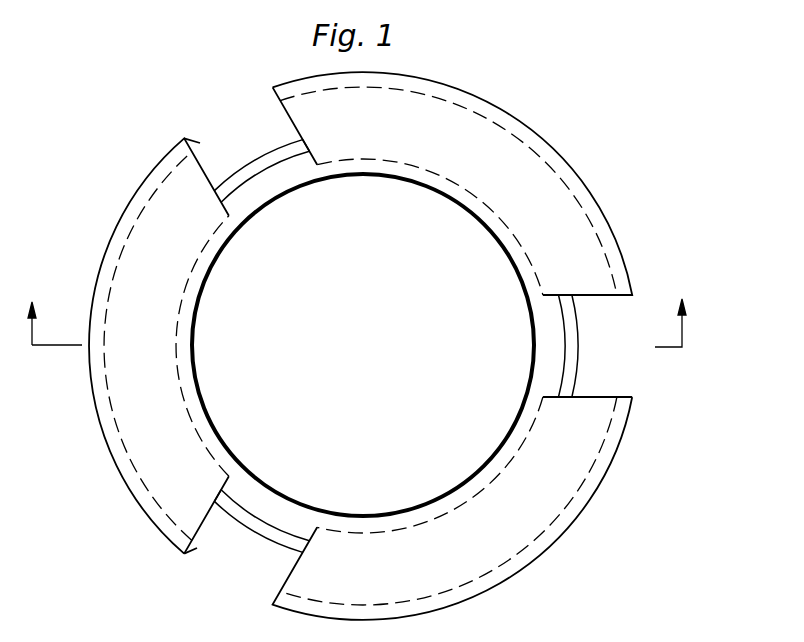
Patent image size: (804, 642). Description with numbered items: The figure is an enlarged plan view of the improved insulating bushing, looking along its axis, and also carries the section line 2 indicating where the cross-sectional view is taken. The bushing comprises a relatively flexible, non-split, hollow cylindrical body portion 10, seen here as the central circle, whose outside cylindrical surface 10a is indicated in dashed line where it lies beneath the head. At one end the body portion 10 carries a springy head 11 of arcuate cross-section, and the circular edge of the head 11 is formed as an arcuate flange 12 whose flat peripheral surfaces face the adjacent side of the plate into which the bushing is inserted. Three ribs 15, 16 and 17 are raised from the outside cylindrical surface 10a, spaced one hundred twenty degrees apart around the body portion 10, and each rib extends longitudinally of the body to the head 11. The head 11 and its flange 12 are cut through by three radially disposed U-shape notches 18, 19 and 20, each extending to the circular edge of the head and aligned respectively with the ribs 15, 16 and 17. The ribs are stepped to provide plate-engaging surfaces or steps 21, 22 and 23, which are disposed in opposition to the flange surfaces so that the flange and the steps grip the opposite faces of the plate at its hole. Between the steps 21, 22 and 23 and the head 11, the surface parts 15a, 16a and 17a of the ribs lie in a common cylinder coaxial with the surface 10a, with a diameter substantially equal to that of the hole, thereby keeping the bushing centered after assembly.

The section line 2- 2 is at (357, 312).
The cylindrical body portion 10 is at (198, 388).
The outside cylindrical surface 10a is at (181, 388).
The head 11 is at (403, 148).
The arcuate flange 12 is at (337, 346).
The rib 15 is at (257, 150).
The surface part of rib 15a is at (232, 192).
The rib 16 is at (612, 346).
The surface part of rib 16a is at (566, 356).
The rib 17 is at (261, 541).
The surface part of rib 17a is at (250, 529).
The U-shape notch 18 is at (187, 138).
The U-shape notch 19 is at (630, 297).
The U-shape notch 20 is at (188, 553).
The step 21 is at (288, 148).
The step 22 is at (574, 378).
The step 23 is at (233, 517).